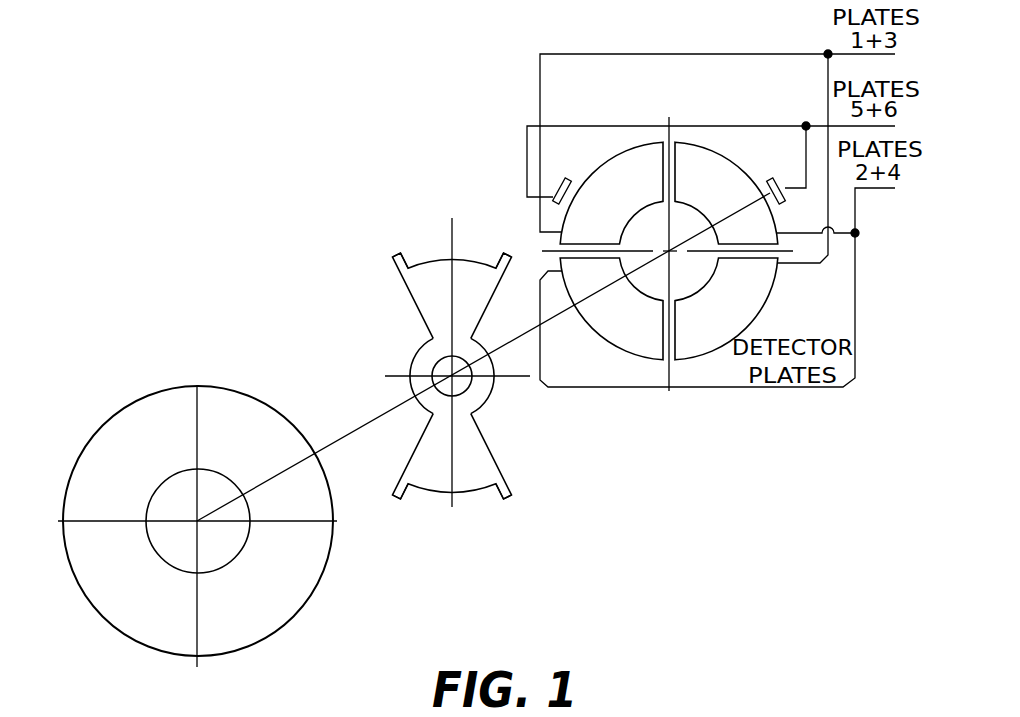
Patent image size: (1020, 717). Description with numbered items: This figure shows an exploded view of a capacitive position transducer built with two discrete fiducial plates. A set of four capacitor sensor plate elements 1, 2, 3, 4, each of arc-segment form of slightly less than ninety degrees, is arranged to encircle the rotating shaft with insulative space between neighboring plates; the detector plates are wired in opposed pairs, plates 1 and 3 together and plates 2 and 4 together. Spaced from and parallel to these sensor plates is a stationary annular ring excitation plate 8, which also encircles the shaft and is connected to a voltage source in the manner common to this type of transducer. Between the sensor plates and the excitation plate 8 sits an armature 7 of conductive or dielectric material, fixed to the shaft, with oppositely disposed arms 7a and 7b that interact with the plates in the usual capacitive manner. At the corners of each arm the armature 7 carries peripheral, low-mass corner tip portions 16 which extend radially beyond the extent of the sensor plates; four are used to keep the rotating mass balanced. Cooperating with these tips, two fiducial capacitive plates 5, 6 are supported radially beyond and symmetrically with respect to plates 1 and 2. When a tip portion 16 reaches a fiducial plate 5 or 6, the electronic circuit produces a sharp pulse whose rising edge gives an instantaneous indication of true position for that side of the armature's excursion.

The capacitor sensor plate element 1 is at (630, 203).
The capacitor sensor plate element 2 is at (730, 205).
The capacitor sensor plate element 3 is at (734, 323).
The capacitor sensor plate element 4 is at (631, 323).
The fiducial capacitive plate 5 is at (569, 176).
The fiducial capacitive plate 6 is at (768, 175).
The armature 7 is at (513, 366).
The armature arm 7a is at (463, 437).
The armature arm 7b is at (433, 290).
The excitation plate 8 is at (297, 613).
The corner tip portions 16 is at (458, 366).